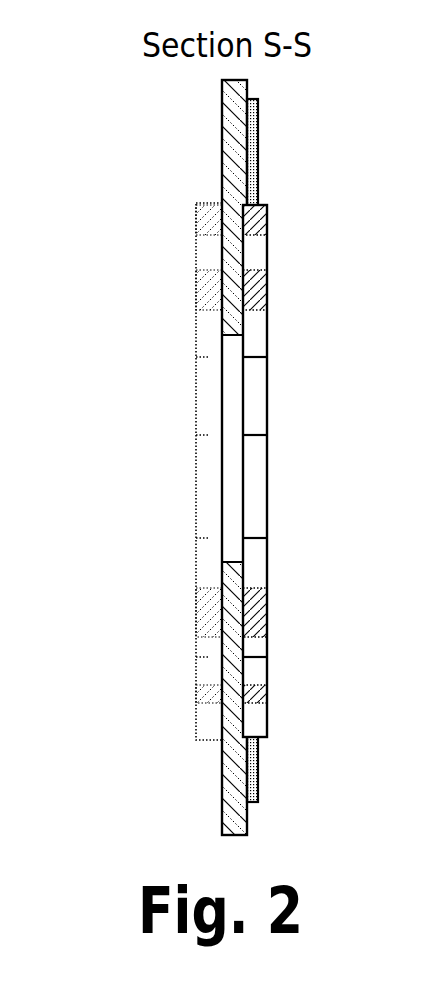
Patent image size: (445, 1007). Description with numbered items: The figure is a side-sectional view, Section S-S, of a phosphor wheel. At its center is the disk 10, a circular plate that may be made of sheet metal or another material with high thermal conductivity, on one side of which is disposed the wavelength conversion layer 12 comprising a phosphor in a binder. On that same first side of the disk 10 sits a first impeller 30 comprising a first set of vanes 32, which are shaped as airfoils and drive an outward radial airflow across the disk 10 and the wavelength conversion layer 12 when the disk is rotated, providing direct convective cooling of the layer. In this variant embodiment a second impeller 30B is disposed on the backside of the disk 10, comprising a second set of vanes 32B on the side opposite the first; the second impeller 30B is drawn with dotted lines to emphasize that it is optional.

The disk 10 is at (222, 152).
The wavelength conversion layer 12 is at (258, 148).
The vanes 32 is at (255, 398).
The second set of vanes 32B is at (213, 398).
The first impeller 30 is at (301, 636).
The second impeller 30B is at (164, 635).